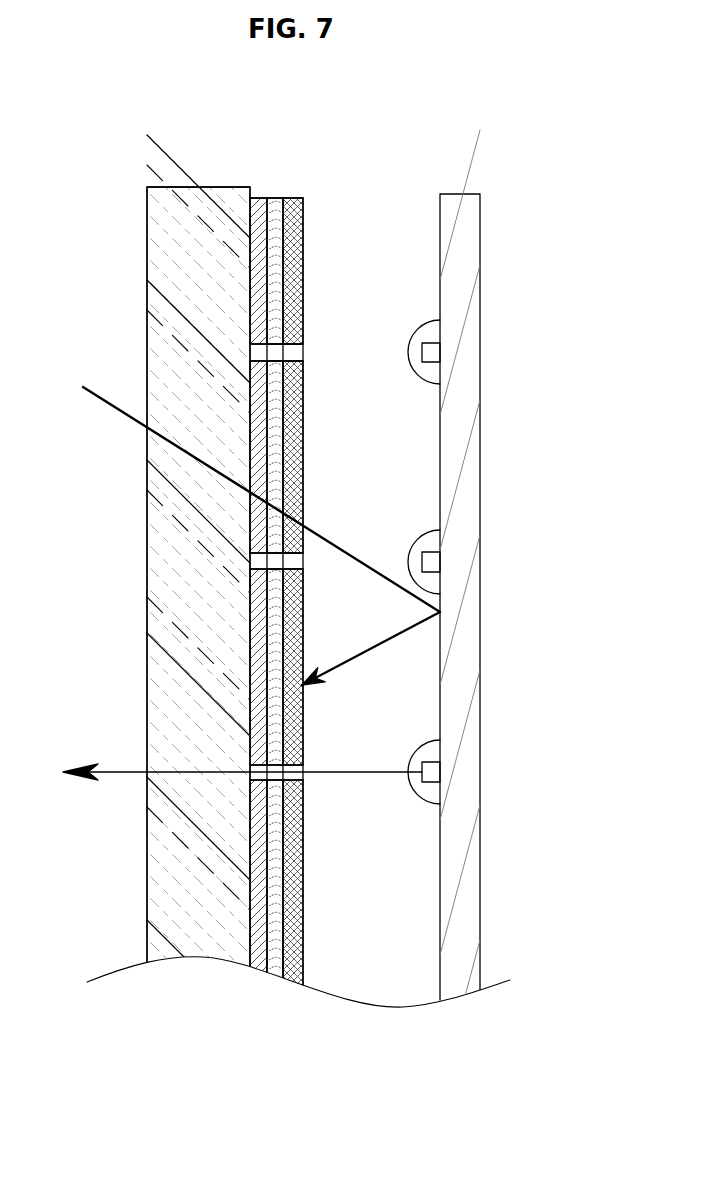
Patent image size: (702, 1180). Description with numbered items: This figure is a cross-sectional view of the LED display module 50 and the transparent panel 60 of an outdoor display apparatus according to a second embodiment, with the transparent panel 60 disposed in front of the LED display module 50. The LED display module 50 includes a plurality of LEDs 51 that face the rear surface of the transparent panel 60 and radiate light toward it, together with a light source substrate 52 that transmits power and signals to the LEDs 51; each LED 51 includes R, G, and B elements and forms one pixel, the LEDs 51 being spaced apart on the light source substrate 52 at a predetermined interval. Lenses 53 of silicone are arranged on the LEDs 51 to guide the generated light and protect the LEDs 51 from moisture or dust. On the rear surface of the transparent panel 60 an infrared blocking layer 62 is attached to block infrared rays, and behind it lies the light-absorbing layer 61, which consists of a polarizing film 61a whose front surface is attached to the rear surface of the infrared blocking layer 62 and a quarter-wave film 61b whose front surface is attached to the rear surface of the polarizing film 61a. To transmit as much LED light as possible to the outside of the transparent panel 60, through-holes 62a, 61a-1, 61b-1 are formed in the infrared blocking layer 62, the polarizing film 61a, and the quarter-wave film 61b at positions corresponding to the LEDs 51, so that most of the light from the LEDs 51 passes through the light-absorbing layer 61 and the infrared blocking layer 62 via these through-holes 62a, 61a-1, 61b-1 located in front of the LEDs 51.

The LED display module 50 is at (500, 610).
The LEDs 51 is at (432, 350).
The light source substrate 52 is at (458, 410).
The lenses 53 is at (434, 319).
The transparent panel 60 is at (193, 212).
The light-absorbing layer 61 is at (302, 107).
The polarizing film 61a is at (278, 198).
The through-hole 61a-1 is at (298, 398).
The λ/4 film 61b is at (303, 204).
The through-hole 61b-1 is at (290, 355).
The infrared blocking layer 62 is at (260, 207).
The through-hole 62a is at (266, 354).